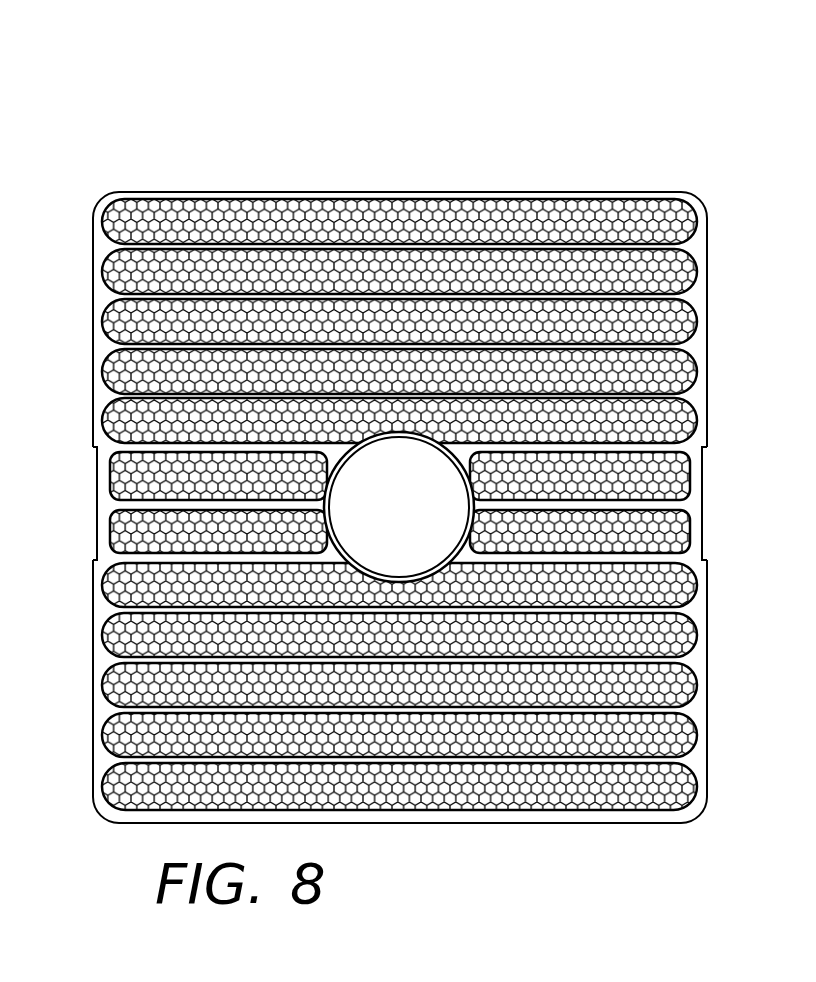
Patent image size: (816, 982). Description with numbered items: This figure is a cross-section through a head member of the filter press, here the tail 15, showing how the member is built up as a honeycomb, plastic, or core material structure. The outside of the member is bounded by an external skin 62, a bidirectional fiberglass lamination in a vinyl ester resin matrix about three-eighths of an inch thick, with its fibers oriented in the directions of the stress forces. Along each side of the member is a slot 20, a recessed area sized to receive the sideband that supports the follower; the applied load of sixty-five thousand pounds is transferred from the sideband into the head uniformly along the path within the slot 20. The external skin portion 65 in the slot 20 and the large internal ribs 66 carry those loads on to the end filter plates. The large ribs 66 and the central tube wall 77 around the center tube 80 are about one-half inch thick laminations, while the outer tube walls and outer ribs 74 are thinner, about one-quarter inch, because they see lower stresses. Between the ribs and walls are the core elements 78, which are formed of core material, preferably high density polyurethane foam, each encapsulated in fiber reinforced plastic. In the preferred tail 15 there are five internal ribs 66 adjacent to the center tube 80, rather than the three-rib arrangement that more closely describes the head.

The tail 15 is at (500, 155).
The slot 20 is at (702, 493).
The external skin 62 is at (92, 291).
The external skin portion 65 is at (692, 524).
The large internal ribs 66 is at (97, 446).
The outer ribs 74 is at (176, 290).
The central tube wall 77 is at (338, 538).
The core elements 78 is at (645, 239).
The center tube 80 is at (397, 507).